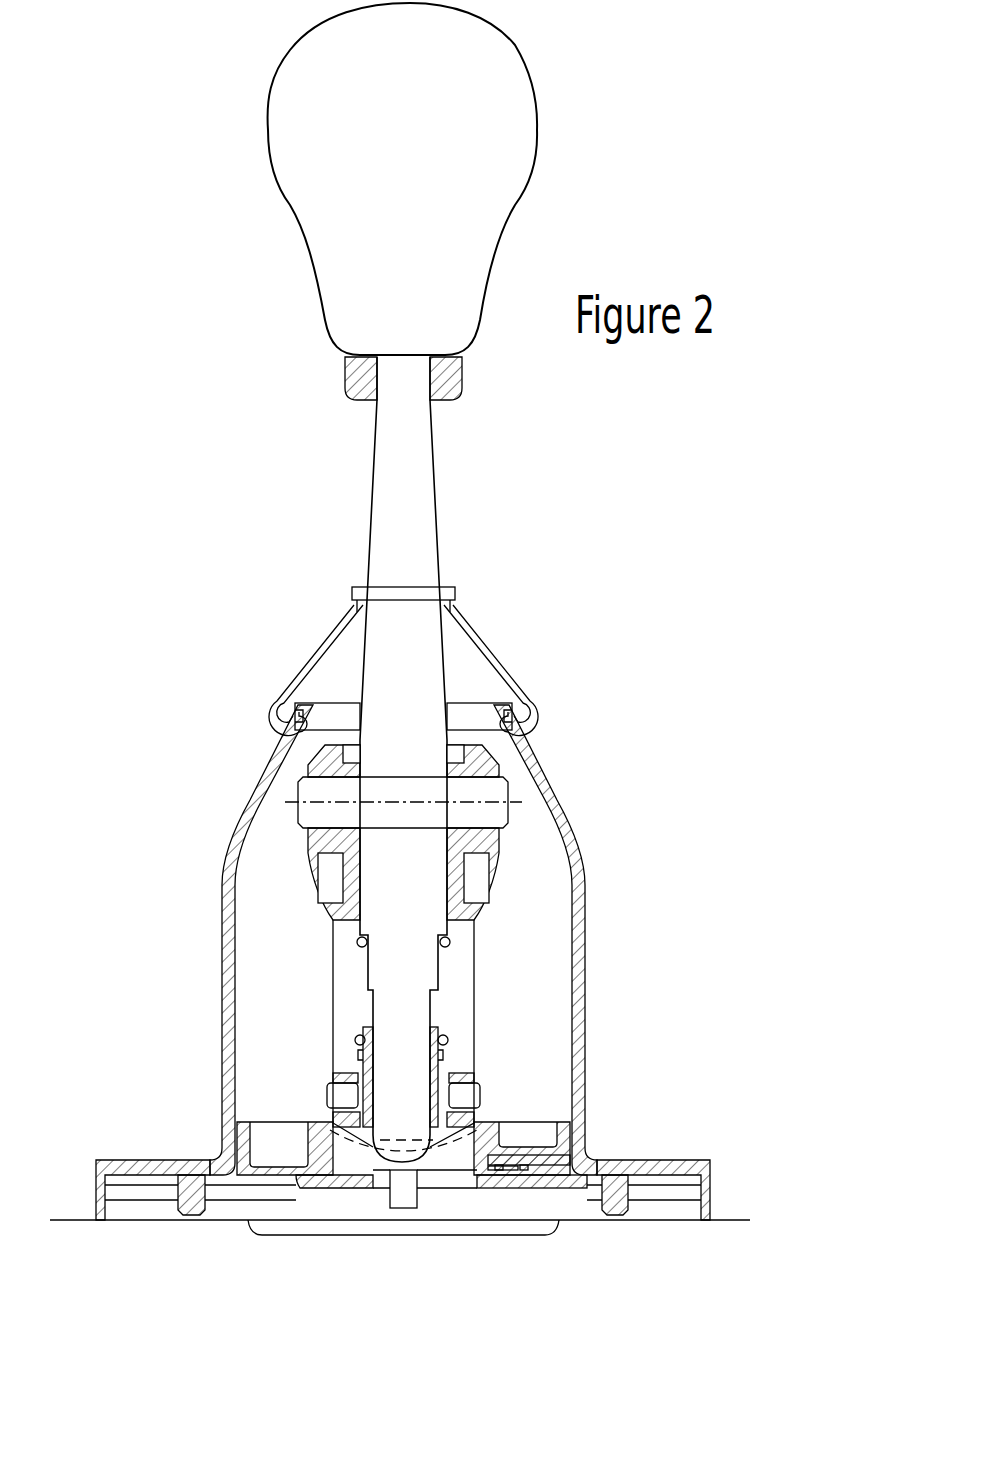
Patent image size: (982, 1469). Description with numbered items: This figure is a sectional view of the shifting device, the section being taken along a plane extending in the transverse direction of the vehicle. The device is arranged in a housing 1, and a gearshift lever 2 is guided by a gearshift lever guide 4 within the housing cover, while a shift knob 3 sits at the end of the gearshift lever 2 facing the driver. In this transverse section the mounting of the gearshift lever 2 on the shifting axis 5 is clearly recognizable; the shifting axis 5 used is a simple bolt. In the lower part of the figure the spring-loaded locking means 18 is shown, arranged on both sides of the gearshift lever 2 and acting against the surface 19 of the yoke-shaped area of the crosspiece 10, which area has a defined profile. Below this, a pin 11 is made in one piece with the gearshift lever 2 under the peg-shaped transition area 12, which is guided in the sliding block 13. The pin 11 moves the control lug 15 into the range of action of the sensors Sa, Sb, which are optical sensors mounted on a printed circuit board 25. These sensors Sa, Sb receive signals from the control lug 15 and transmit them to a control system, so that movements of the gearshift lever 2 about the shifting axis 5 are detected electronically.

The housing 1 is at (257, 835).
The gearshift lever 2 is at (390, 440).
The shift knob 3 is at (337, 260).
The gearshift lever guide 4 is at (332, 712).
The shifting axis 5 is at (485, 797).
The crosspiece 10 is at (487, 838).
The pin 11 is at (402, 1197).
The peg-shaped transition area 12 is at (387, 1160).
The sliding block 13 is at (330, 1127).
The control lug 15 is at (596, 1162).
The spring-loaded locking means 18 is at (470, 1092).
The surface 19 is at (468, 1127).
The printed circuit board 25 is at (528, 1158).
The sensor Sa is at (570, 1253).
The sensor Sb is at (500, 1170).